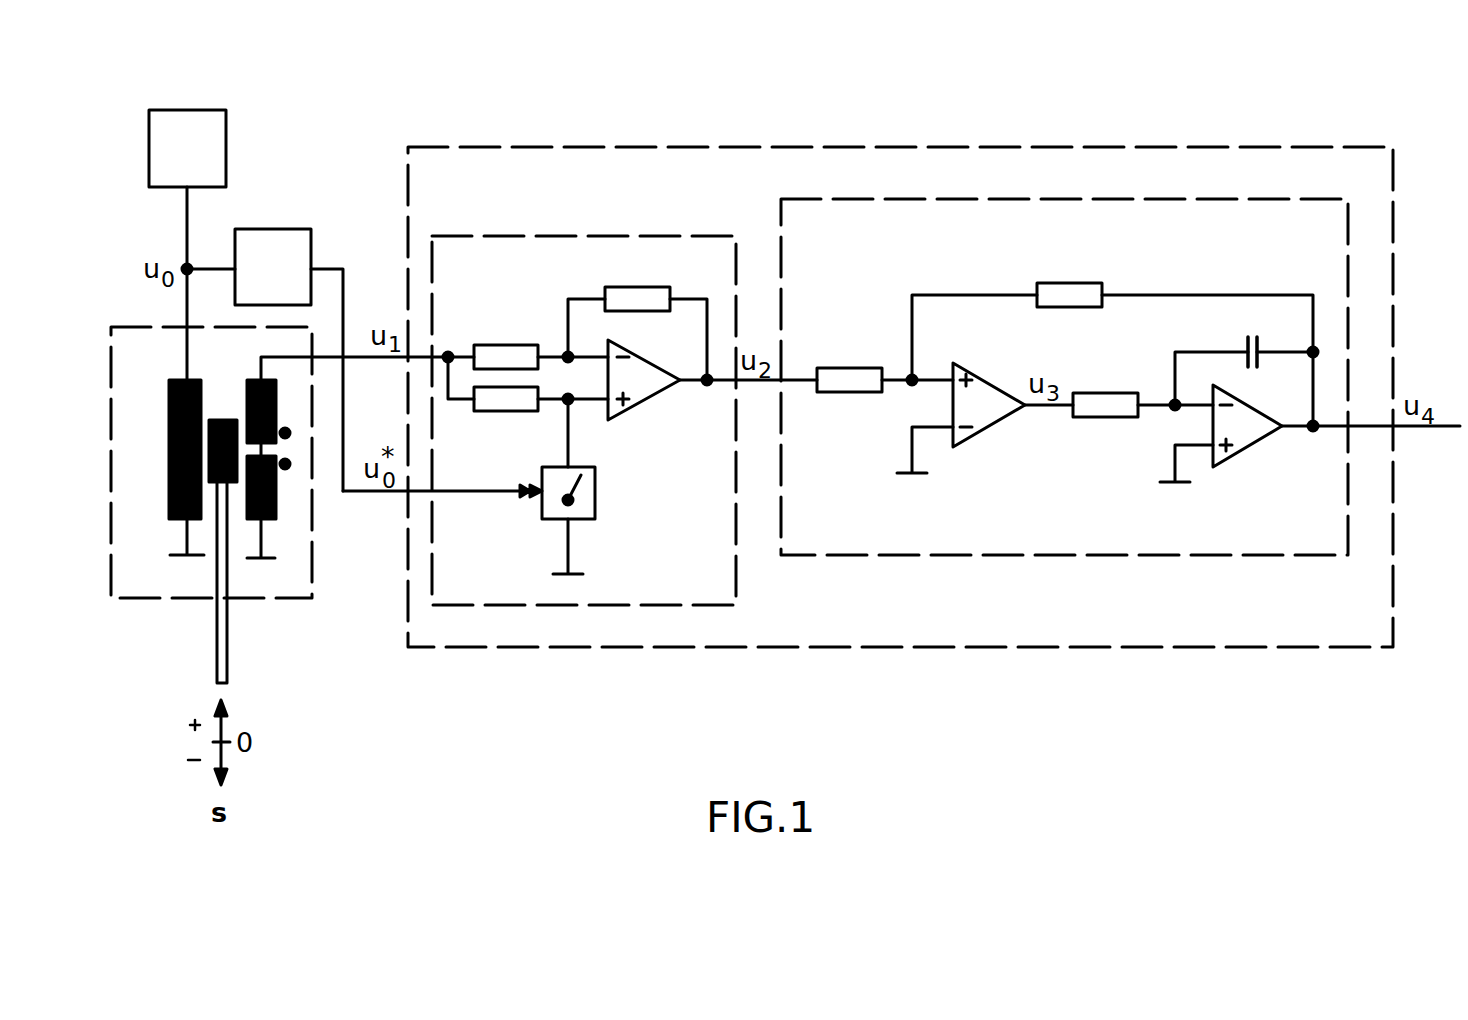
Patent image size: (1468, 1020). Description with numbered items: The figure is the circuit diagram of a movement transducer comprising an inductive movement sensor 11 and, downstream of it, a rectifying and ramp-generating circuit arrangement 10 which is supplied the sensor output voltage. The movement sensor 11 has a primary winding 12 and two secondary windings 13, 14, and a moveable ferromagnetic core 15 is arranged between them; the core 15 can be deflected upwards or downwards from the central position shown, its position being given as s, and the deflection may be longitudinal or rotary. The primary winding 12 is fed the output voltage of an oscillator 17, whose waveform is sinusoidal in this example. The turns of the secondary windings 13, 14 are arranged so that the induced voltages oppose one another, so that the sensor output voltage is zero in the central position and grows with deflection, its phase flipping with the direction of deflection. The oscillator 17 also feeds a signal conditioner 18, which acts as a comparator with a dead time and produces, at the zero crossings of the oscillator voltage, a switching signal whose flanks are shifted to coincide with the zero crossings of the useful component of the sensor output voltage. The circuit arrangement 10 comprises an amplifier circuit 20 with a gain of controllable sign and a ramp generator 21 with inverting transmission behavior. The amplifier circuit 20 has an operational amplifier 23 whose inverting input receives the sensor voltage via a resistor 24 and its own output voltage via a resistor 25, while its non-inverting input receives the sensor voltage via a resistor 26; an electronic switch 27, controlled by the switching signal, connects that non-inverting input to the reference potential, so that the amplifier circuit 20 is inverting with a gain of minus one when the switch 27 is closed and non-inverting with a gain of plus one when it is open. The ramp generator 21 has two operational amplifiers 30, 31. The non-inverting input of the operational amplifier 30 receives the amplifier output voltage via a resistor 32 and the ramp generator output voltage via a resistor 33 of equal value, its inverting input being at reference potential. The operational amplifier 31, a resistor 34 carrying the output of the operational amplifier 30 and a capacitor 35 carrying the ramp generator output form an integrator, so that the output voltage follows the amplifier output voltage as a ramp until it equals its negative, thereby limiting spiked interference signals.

The rectifying and ramp-generating circuit arrangement 10 is at (930, 647).
The inductive movement sensor 11 is at (272, 598).
The primary winding 12 is at (170, 467).
The secondary winding 13 is at (276, 400).
The secondary winding 14 is at (276, 519).
The moveable ferromagnetic core 15 is at (222, 420).
The oscillator 17 is at (226, 110).
The signal conditioner 18 is at (293, 229).
The amplifier circuit 20 is at (738, 568).
The ramp generator 21 is at (1020, 556).
The operational amplifier 23 is at (643, 403).
The resistor 24 is at (502, 345).
The resistor 25 is at (628, 287).
The resistor 26 is at (492, 411).
The electronic switch 27 is at (595, 495).
The operational amplifier 30 is at (990, 428).
The operational amplifier 31 is at (1250, 448).
The resistor 32 is at (855, 368).
The resistor 33 is at (1066, 283).
The resistor 34 is at (1100, 418).
The capacitor 35 is at (1240, 342).